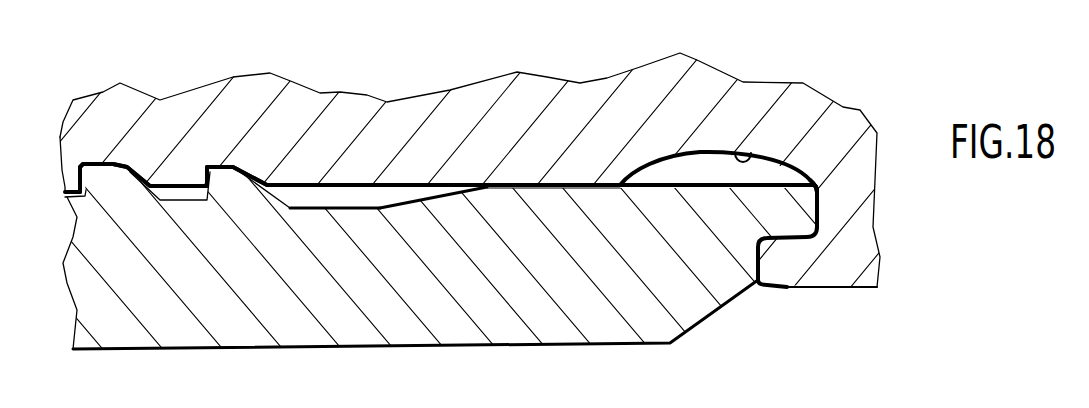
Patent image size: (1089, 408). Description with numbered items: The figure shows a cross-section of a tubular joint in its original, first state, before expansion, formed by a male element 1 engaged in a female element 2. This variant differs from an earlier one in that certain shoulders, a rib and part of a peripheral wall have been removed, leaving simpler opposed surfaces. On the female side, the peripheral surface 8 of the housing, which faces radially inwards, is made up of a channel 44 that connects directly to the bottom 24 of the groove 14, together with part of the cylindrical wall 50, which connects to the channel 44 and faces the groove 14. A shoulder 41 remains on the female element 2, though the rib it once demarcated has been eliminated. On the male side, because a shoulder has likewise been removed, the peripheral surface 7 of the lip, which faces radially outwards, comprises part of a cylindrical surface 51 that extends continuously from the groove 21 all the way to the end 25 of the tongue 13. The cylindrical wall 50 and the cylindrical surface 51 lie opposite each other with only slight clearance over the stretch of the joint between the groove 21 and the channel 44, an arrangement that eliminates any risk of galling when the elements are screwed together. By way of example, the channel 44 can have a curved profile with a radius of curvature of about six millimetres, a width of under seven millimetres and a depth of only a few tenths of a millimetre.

The male element 1 is at (465, 276).
The female element 2 is at (845, 300).
The peripheral surface of the lip 7 is at (498, 200).
The peripheral surface of the housing 8 is at (382, 214).
The tongue 13 is at (819, 192).
The groove 14 is at (800, 212).
The groove 21 is at (310, 208).
The bottom of the groove 24 is at (806, 214).
The end of the tongue 25 is at (820, 207).
The shoulder 41 is at (628, 185).
The channel 44 is at (747, 153).
The cylindrical wall 50 is at (352, 189).
The cylindrical surface 51 is at (775, 103).